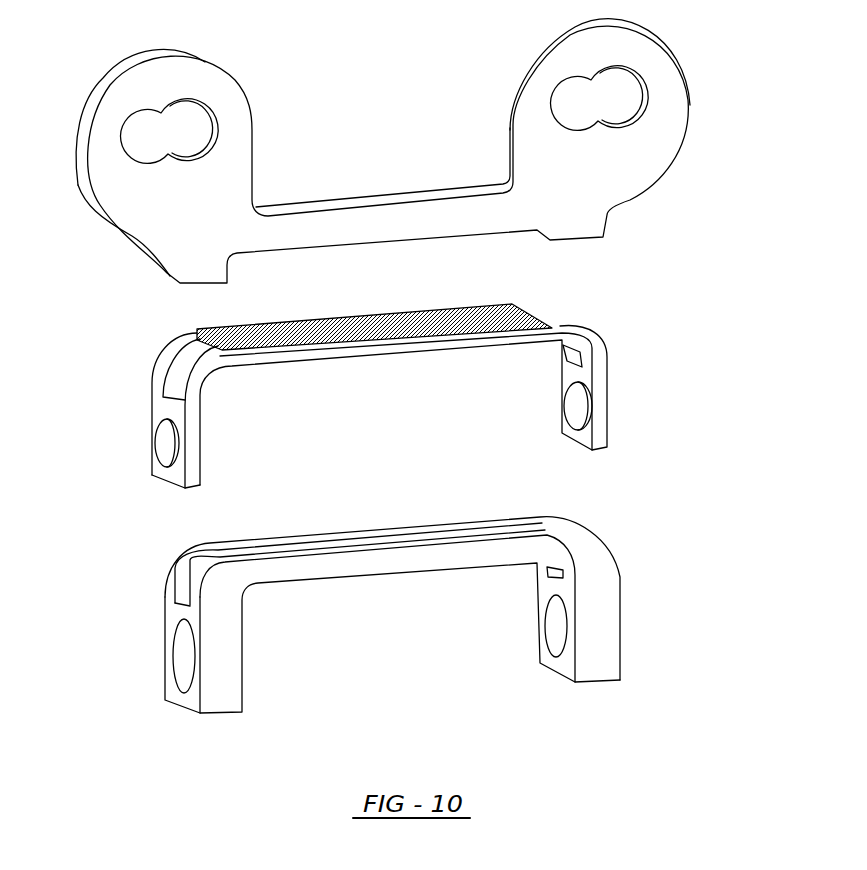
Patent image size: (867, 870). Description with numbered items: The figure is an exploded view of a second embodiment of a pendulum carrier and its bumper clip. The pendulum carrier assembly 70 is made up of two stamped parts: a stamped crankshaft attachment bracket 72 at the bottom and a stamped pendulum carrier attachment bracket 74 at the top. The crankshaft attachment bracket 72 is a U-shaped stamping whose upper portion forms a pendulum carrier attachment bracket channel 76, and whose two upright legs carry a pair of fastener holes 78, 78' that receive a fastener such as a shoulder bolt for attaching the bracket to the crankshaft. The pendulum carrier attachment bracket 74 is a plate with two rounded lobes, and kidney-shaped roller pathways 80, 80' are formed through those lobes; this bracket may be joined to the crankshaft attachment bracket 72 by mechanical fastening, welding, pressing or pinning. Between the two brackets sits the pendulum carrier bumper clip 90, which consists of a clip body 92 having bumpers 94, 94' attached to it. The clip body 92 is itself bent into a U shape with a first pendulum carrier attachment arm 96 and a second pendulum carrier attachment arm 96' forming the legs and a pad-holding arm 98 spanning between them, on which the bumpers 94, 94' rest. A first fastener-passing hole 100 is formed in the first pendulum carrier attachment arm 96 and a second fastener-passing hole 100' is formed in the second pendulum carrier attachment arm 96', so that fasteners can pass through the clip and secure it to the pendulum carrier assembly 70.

The pendulum carrier assembly 70 is at (55, 85).
The crankshaft attachment bracket 72 is at (368, 606).
The pendulum carrier attachment bracket 74 is at (232, 190).
The pendulum carrier attachment bracket channel 76 is at (209, 558).
The fastener hole 78 is at (156, 693).
The fastener hole 78' is at (531, 658).
The kidney-shaped roller pathway 80 is at (192, 91).
The kidney-shaped roller pathway 80' is at (566, 73).
The pendulum carrier bumper clip 90 is at (388, 392).
The clip body 92 is at (388, 395).
The bumper 94 is at (374, 303).
The bumper 94' is at (274, 305).
The first pendulum carrier attachment arm 96 is at (141, 434).
The second pendulum carrier attachment arm 96' is at (628, 403).
The pad-holding arm 98 is at (447, 347).
The first fastener-passing hole 100 is at (133, 474).
The second fastener-passing hole 100' is at (628, 406).